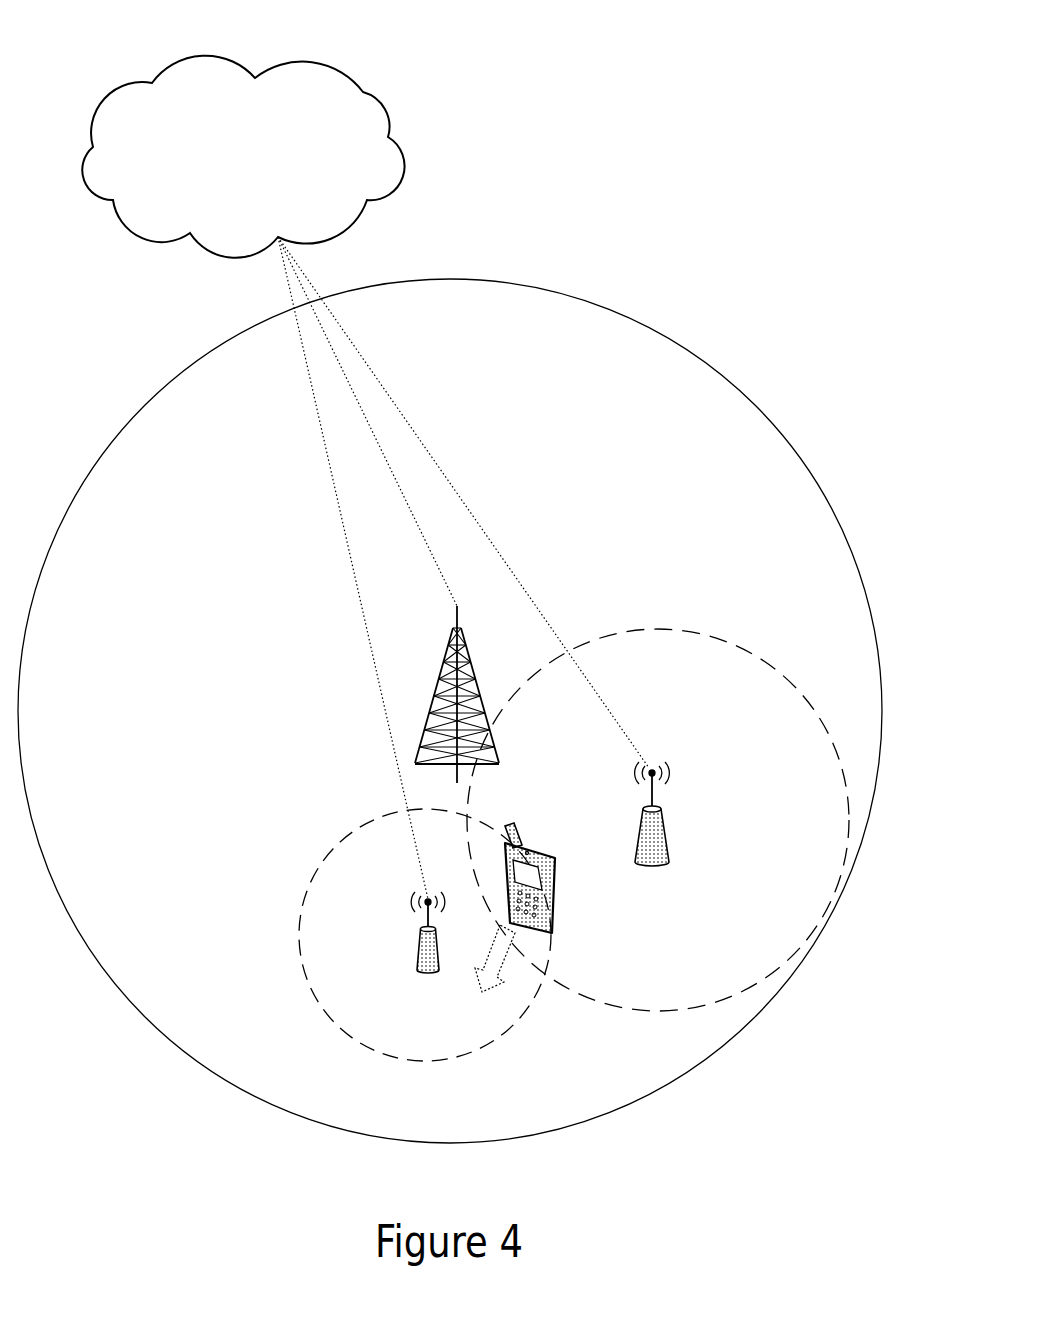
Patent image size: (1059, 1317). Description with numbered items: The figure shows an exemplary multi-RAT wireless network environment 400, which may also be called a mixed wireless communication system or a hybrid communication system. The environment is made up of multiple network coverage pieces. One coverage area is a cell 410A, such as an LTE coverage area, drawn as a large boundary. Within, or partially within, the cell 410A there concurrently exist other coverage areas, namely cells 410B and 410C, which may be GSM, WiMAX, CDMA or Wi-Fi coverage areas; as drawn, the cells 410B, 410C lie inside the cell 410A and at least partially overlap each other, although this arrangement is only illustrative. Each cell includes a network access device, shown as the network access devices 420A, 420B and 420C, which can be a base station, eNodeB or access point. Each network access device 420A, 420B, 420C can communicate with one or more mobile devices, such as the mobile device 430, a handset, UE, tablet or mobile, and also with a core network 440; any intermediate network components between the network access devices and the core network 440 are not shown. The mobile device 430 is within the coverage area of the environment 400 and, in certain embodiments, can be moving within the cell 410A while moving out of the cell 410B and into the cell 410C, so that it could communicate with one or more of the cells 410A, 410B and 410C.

The multi-RAT wireless network environment 400 is at (789, 86).
The cell 410A is at (475, 323).
The cell 410B is at (682, 666).
The cell 410C is at (449, 1048).
The network access device 420A is at (593, 529).
The network access device 420B is at (768, 637).
The network access device 420C is at (303, 1024).
The mobile device 430 is at (598, 990).
The core network 440 is at (259, 165).